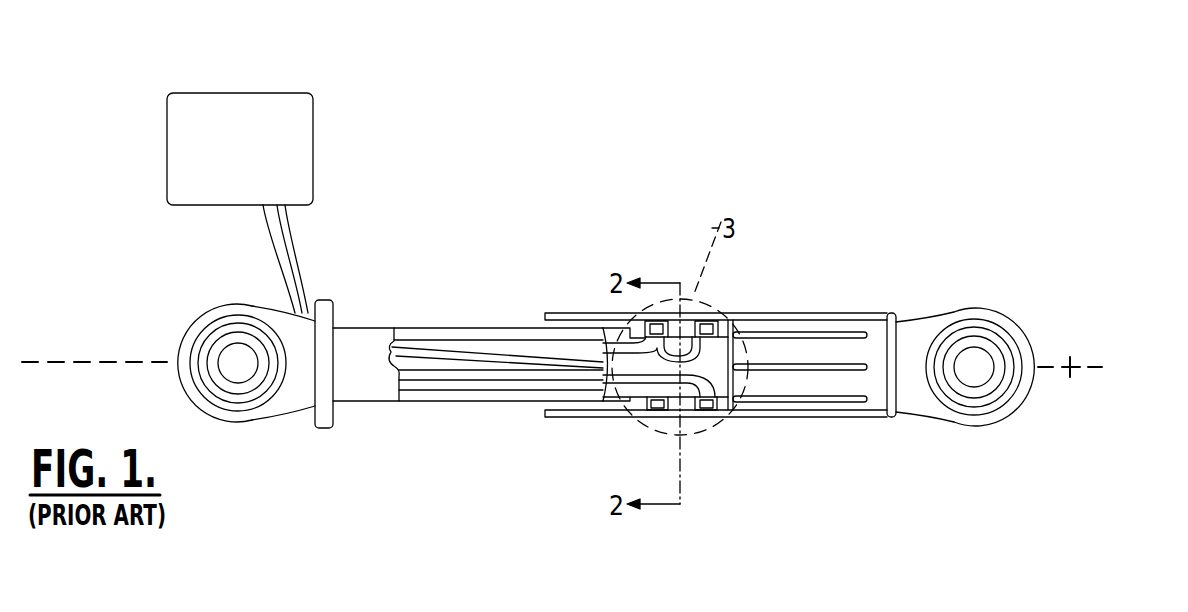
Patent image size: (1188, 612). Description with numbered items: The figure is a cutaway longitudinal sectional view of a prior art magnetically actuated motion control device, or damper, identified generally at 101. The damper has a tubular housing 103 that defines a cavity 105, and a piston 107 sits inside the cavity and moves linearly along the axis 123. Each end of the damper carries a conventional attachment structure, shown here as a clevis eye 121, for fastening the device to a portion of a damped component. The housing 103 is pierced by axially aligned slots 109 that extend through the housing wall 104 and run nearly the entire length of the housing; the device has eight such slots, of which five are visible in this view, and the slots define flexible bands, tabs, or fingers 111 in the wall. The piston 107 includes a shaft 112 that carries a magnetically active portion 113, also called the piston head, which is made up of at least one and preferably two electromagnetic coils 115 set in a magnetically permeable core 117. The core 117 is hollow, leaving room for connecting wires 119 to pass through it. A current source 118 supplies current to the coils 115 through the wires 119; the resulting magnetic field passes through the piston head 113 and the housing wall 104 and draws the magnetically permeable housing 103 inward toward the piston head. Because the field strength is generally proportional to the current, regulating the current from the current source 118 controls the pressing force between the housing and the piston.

The motion control device 101 is at (463, 485).
The tubular housing 103 is at (826, 382).
The housing wall 104 is at (877, 313).
The cavity 105 is at (558, 320).
The piston 107 is at (463, 411).
The axially aligned slot 109 is at (817, 273).
The flexible bands 111 is at (870, 442).
The shaft 112 is at (433, 328).
The magnetically active portion 113 is at (687, 413).
The electromagnetic coils 115 is at (707, 330).
The magnetically permeable core 117 is at (718, 413).
The current source 118 is at (313, 143).
The connecting wires 119 is at (321, 251).
The clevis eye 121 is at (257, 387).
The axis 123 is at (1072, 352).